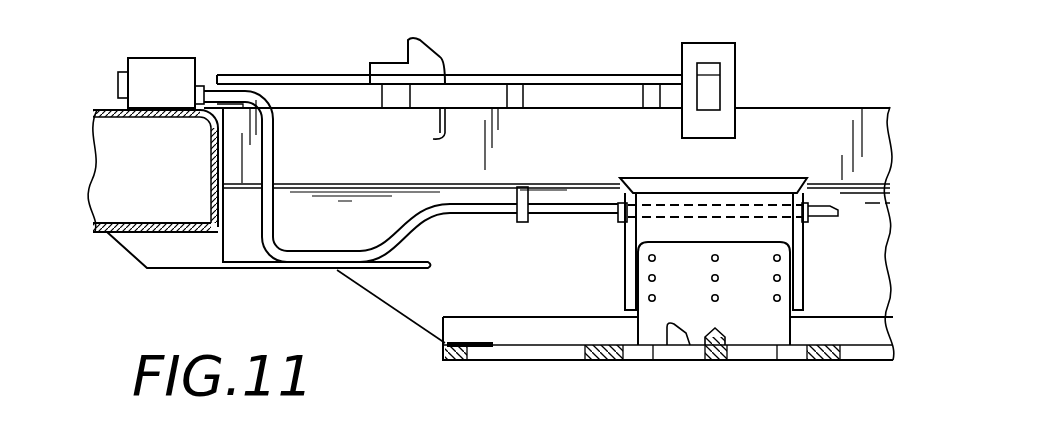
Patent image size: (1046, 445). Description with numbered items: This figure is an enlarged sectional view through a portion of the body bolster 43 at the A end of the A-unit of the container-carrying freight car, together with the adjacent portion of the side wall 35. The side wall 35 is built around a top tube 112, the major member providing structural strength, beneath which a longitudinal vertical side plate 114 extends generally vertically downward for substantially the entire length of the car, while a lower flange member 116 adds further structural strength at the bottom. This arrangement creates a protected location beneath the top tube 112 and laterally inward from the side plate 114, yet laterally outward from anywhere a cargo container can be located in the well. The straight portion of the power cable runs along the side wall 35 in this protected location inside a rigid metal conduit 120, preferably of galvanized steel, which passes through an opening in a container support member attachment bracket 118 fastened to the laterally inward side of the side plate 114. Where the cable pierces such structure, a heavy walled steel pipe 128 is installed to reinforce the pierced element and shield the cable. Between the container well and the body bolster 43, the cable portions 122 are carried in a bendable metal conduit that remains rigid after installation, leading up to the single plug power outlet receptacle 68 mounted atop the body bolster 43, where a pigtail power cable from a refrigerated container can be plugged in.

The body bolster 43 is at (110, 110).
The single plug power outlet receptacle 68 is at (118, 78).
The top tube 112 is at (545, 130).
The side wall 35 is at (800, 104).
The A end A is at (760, 103).
The cable portions 122 is at (277, 167).
The rigid metal conduit 120 is at (583, 205).
The heavy walled steel pipe 128 is at (703, 203).
The container support member attachment bracket 118 is at (788, 230).
The side plate 114 is at (583, 285).
The lower flange member 116 is at (535, 330).